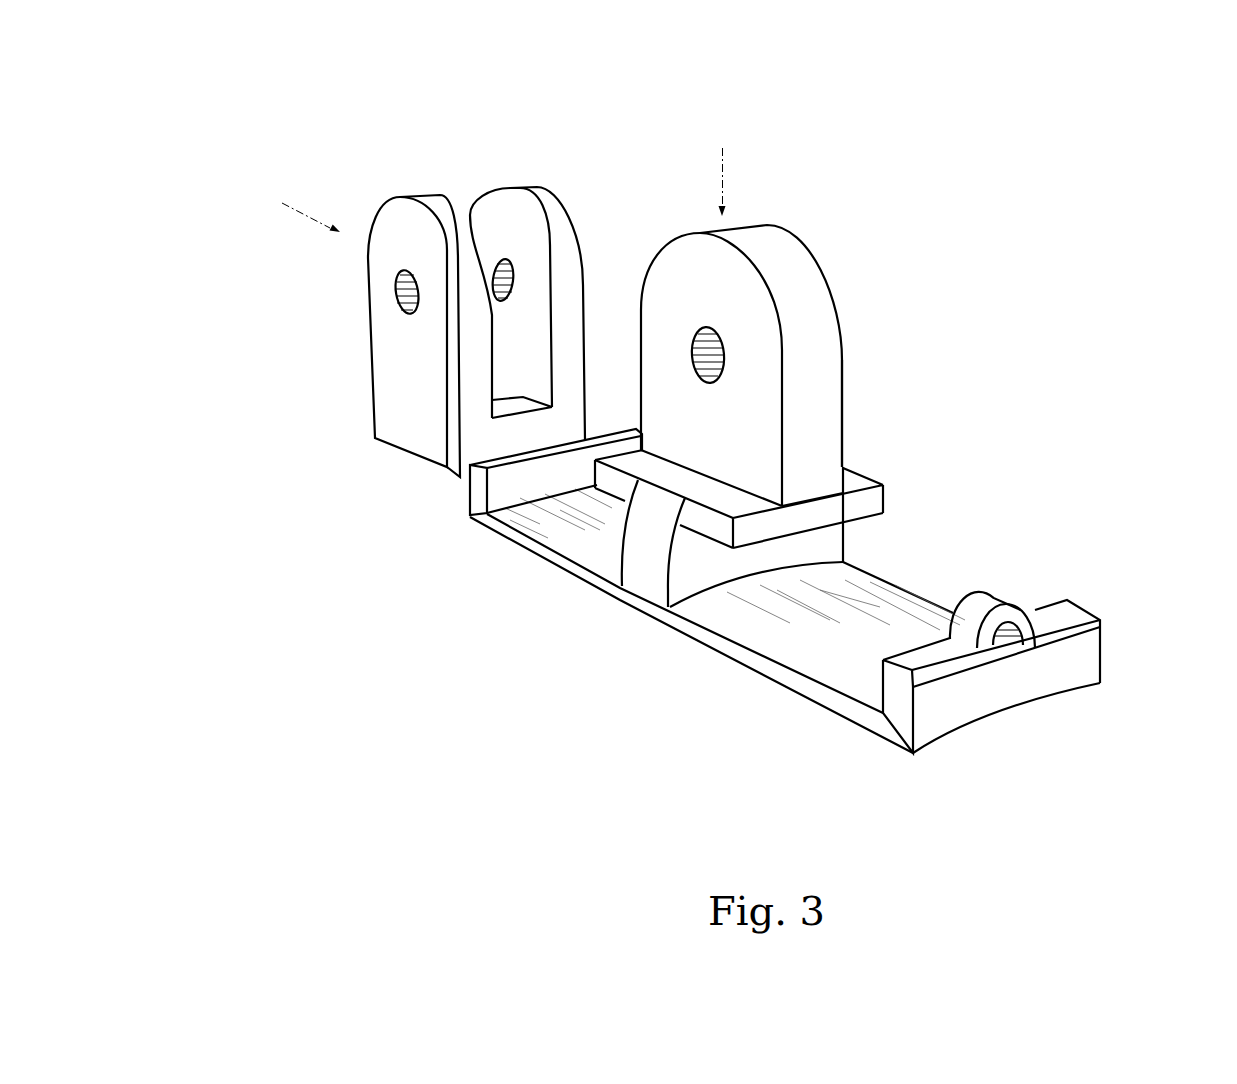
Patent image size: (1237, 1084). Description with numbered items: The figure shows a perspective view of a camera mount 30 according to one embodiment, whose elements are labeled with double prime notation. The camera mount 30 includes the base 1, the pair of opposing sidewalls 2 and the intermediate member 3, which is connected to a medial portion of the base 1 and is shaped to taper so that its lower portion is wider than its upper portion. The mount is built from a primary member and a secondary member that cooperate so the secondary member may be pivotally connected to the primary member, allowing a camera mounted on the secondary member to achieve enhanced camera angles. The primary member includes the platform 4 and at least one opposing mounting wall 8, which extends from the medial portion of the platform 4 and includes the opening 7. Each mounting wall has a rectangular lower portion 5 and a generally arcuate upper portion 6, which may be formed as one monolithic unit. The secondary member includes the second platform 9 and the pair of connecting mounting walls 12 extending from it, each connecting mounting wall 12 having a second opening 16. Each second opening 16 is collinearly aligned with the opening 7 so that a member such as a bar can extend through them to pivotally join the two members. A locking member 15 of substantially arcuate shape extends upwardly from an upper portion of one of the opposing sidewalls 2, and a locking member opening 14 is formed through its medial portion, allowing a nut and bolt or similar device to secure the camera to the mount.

The base 1 is at (563, 523).
The pair of opposing sidewalls 2 is at (465, 485).
The intermediate member 3 is at (650, 562).
The platform 4 is at (850, 485).
The lower portion 5 is at (813, 400).
The upper portion 6 is at (687, 265).
The opening 7 is at (705, 348).
The opposing mounting wall 8 is at (823, 327).
The second platform 9 is at (497, 397).
The pair of connecting mounting walls 12 is at (510, 213).
The locking member opening 14 is at (1003, 636).
The locking member 15 is at (984, 590).
The second opening 16 is at (498, 296).
The camera mount 30 is at (1027, 257).